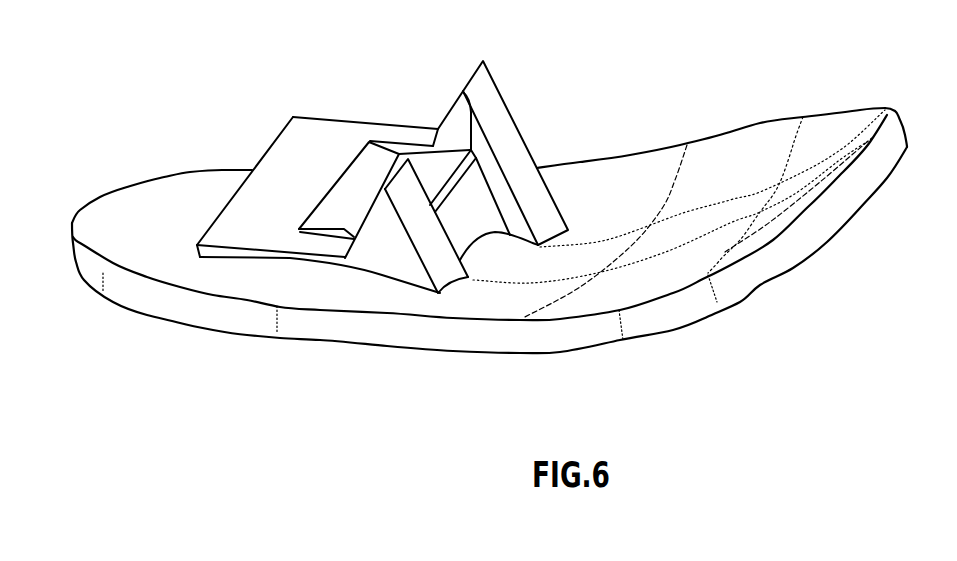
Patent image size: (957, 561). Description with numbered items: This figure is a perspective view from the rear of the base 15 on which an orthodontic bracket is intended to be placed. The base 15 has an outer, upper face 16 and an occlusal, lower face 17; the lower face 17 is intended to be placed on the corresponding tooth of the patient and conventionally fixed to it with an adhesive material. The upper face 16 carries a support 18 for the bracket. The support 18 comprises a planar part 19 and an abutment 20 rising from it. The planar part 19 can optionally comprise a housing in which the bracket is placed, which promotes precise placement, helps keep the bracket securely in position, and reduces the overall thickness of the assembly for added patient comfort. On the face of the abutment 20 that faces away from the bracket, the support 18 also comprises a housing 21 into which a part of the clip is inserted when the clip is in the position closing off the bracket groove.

The base 15 is at (877, 243).
The outer (upper) face 16 is at (728, 150).
The occlusal (lower) face 17 is at (742, 302).
The support 18 is at (368, 120).
The planar part 19 is at (275, 177).
The abutment 20 is at (483, 92).
The housing 21 is at (473, 210).